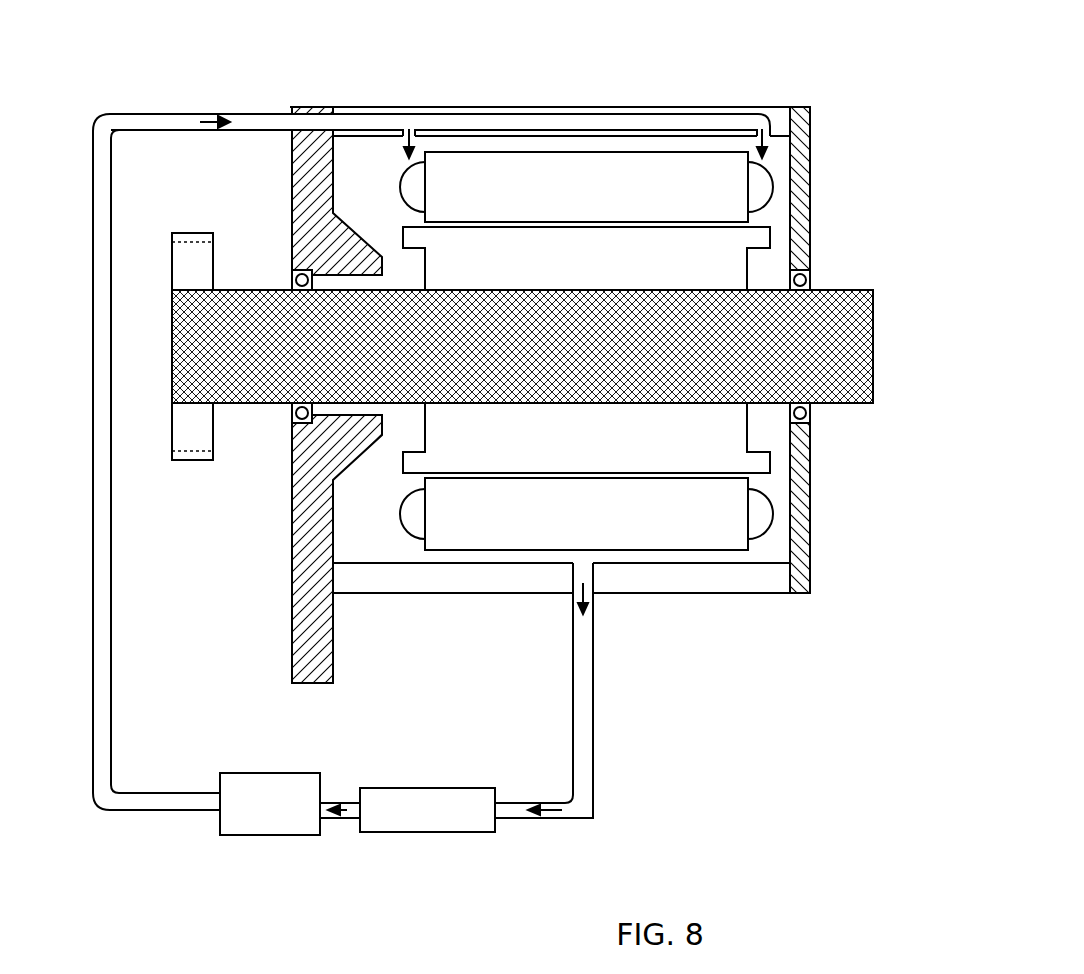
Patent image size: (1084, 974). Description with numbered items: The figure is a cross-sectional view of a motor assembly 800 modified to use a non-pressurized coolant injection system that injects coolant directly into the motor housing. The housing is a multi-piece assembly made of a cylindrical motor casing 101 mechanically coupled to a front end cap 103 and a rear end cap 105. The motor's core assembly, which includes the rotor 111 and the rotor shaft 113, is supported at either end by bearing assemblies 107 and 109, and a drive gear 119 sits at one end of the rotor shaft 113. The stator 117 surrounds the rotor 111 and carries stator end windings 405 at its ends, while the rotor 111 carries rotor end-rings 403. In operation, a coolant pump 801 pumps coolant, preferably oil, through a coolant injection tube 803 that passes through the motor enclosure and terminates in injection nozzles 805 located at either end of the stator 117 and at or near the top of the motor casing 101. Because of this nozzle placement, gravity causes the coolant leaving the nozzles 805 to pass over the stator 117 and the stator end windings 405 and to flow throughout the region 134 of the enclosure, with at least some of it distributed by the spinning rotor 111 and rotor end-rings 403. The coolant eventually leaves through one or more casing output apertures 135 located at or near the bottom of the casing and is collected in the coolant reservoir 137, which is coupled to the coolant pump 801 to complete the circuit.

The motor assembly with non-pressurized coolant injection system 800 is at (506, 439).
The cylindrical motor casing 101 is at (483, 107).
The front end cap 103 is at (303, 198).
The rear end cap 105 is at (807, 150).
The bearing assembly 107 is at (293, 280).
The bearing assembly 109 is at (812, 279).
The rotor 111 is at (546, 266).
The rotor shaft 113 is at (847, 383).
The stator 117 is at (546, 192).
The drive gear 119 is at (183, 262).
The region of the motor enclosure 134 is at (357, 209).
The output aperture 135 is at (607, 577).
The coolant reservoir 137 is at (413, 832).
The rotor end-ring 403 is at (782, 237).
The stator end winding 405 is at (780, 183).
The coolant pump 801 is at (273, 835).
The coolant injection tube 803 is at (111, 625).
The injection nozzle 805 is at (389, 146).